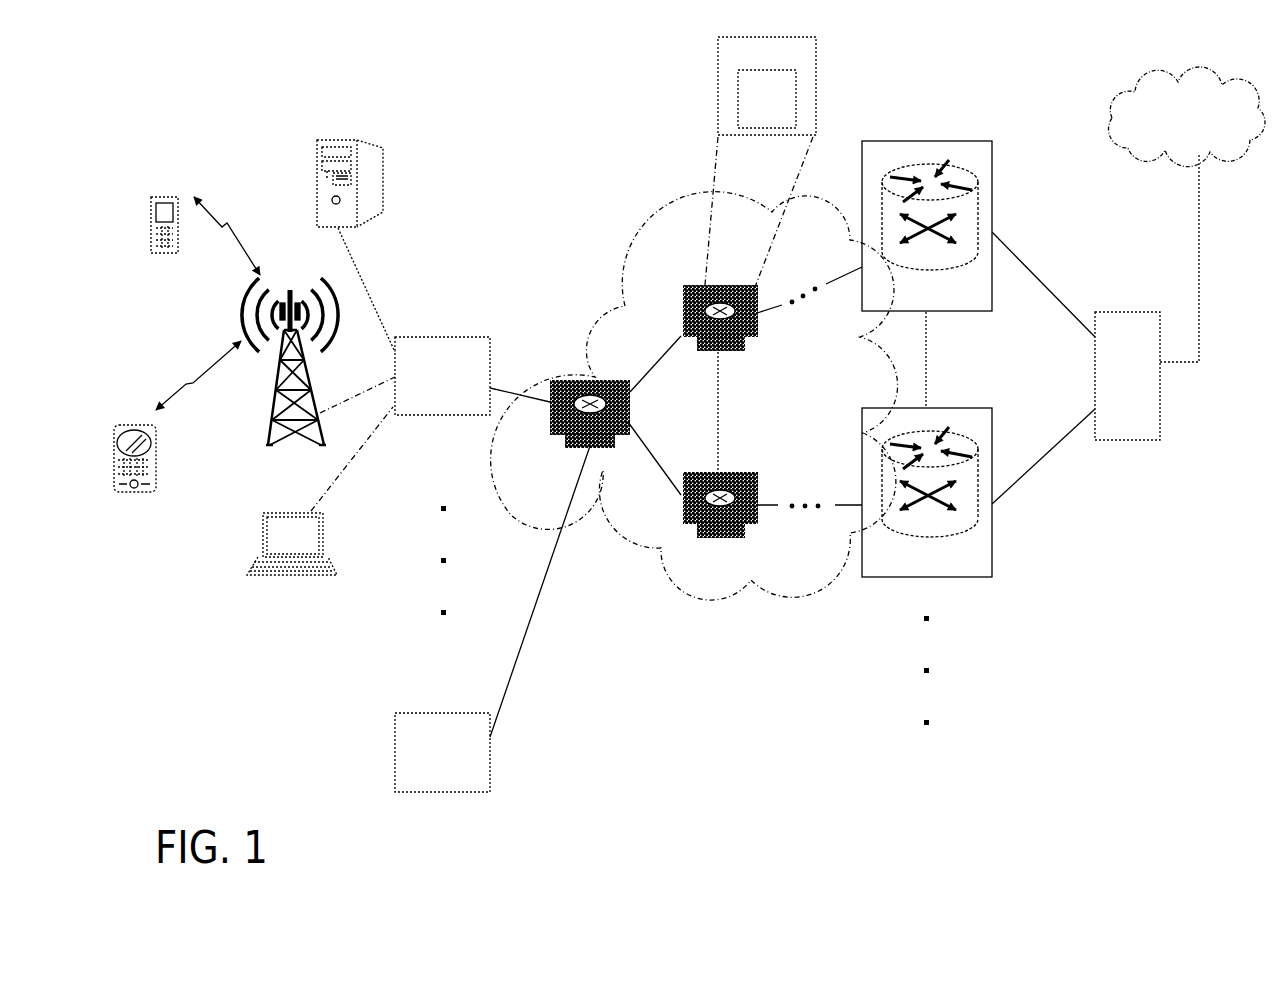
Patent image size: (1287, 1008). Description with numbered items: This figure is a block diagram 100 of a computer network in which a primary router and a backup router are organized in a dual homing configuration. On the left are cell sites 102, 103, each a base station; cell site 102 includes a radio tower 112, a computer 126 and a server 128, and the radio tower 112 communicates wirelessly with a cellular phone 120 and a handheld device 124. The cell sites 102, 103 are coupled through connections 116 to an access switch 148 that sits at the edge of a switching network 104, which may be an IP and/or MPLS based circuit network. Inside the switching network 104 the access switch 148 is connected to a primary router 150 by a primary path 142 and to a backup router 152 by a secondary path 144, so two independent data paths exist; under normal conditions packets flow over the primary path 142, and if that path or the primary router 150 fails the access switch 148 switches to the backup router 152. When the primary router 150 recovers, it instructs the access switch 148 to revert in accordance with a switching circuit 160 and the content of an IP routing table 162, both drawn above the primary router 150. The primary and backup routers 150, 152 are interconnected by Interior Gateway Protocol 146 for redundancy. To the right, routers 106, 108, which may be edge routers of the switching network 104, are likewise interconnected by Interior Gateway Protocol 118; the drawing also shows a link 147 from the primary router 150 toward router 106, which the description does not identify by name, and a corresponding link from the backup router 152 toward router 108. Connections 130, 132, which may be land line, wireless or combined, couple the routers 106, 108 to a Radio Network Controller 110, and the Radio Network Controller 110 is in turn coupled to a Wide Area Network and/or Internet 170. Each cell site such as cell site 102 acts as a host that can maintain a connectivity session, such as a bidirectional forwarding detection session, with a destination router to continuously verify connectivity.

The block diagram 100 is at (234, 56).
The cell site 102 is at (472, 337).
The cell site 103 is at (447, 713).
The switching network 104 is at (706, 182).
The router 106 is at (913, 298).
The router 108 is at (913, 565).
The Radio Network Controller 110 is at (1112, 401).
The radio tower 112 is at (303, 450).
The connections 116 is at (548, 542).
The Interior Gateway Protocol 118 is at (927, 380).
The cellular phone 120 is at (177, 194).
The handheld device 124 is at (157, 483).
The computer 126 is at (277, 549).
The server 128 is at (382, 208).
The connection 130 is at (1056, 290).
The connection 132 is at (1052, 456).
The primary path 142 is at (667, 355).
The secondary path 144 is at (656, 458).
The Interior Gateway Protocol 146 is at (722, 426).
The network link 147 is at (768, 314).
The access switch 148 is at (588, 378).
The primary router 150 is at (766, 310).
The backup router 152 is at (760, 486).
The switching circuit 160 is at (751, 66).
The IP routing table 162 is at (751, 113).
The Wide Area Network and/or Internet 170 is at (1167, 132).